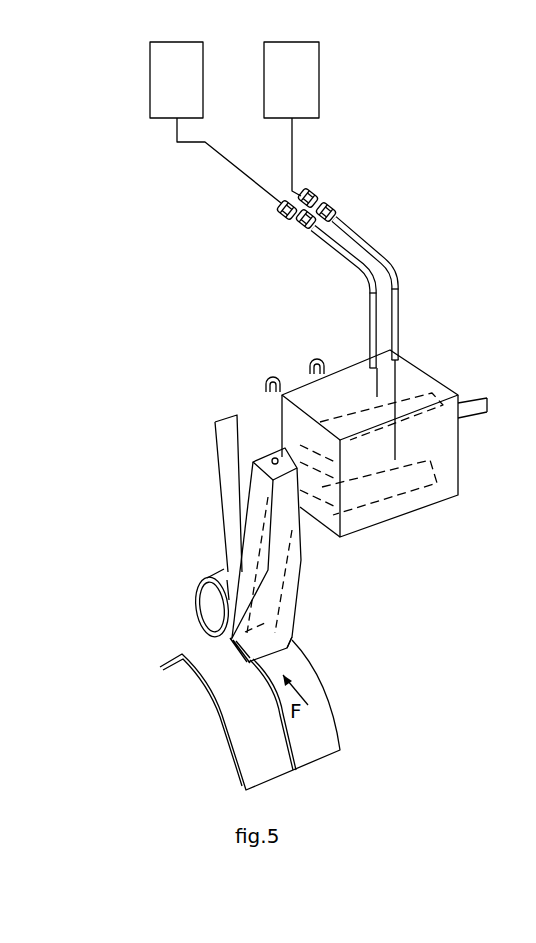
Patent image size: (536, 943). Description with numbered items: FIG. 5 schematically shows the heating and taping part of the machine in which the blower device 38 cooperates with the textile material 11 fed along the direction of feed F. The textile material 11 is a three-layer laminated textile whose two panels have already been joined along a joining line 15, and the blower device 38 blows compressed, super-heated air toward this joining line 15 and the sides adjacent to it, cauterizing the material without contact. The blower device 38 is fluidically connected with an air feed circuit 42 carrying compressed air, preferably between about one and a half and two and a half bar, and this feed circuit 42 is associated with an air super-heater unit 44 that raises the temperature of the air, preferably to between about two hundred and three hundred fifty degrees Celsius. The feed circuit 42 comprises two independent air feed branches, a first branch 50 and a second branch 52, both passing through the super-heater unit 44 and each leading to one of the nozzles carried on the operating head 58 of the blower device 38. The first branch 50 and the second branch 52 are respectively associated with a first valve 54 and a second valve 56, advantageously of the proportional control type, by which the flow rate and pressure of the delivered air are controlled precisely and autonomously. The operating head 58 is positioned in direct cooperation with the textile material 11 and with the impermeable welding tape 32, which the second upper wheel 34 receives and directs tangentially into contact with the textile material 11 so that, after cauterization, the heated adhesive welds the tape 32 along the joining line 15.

The second valve 56 is at (157, 83).
The first valve 54 is at (307, 82).
The air feed circuit 42 is at (368, 235).
The air super-heater unit 44 is at (412, 382).
The second branch 52 is at (462, 441).
The first branch 50 is at (452, 502).
The welding tape 32 is at (222, 441).
The second upper wheel 34 is at (205, 608).
The blower device 38 is at (297, 601).
The operating head 58 is at (248, 657).
The textile material 11 is at (332, 733).
The joining line 15 is at (293, 770).